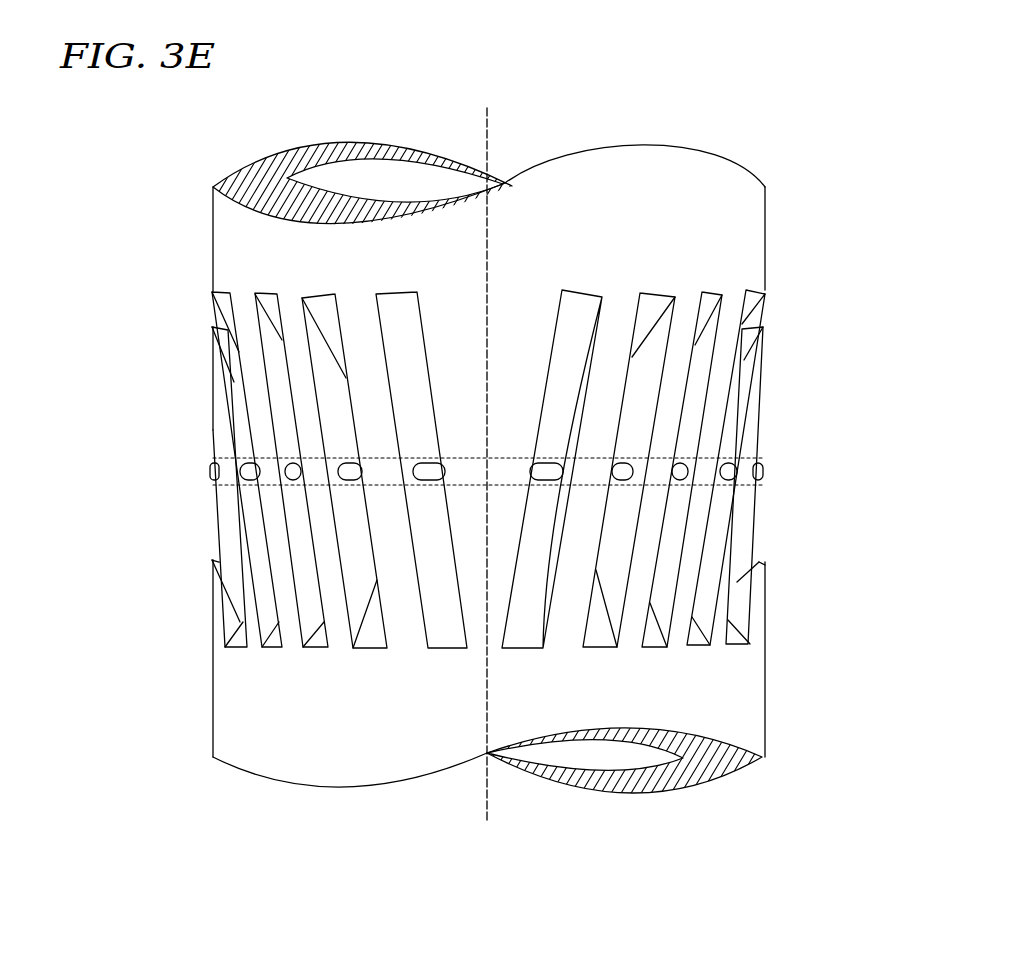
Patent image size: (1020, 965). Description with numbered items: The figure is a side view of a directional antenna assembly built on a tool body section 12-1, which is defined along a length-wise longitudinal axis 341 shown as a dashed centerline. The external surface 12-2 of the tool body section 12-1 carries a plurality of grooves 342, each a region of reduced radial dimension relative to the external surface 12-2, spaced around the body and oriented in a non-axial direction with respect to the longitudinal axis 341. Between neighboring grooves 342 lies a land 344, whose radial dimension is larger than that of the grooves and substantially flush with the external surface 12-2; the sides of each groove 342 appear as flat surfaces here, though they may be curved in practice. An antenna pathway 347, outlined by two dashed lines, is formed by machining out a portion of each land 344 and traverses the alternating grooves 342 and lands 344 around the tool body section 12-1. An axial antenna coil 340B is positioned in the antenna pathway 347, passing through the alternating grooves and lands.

The tool body section 12-1 is at (110, 190).
The external surface 12-2 is at (767, 256).
The longitudinal axis 341 is at (491, 128).
The groove 342 is at (312, 293).
The land 344 is at (452, 308).
The antenna pathway 347 is at (232, 452).
The axial antenna coil 340B is at (731, 459).